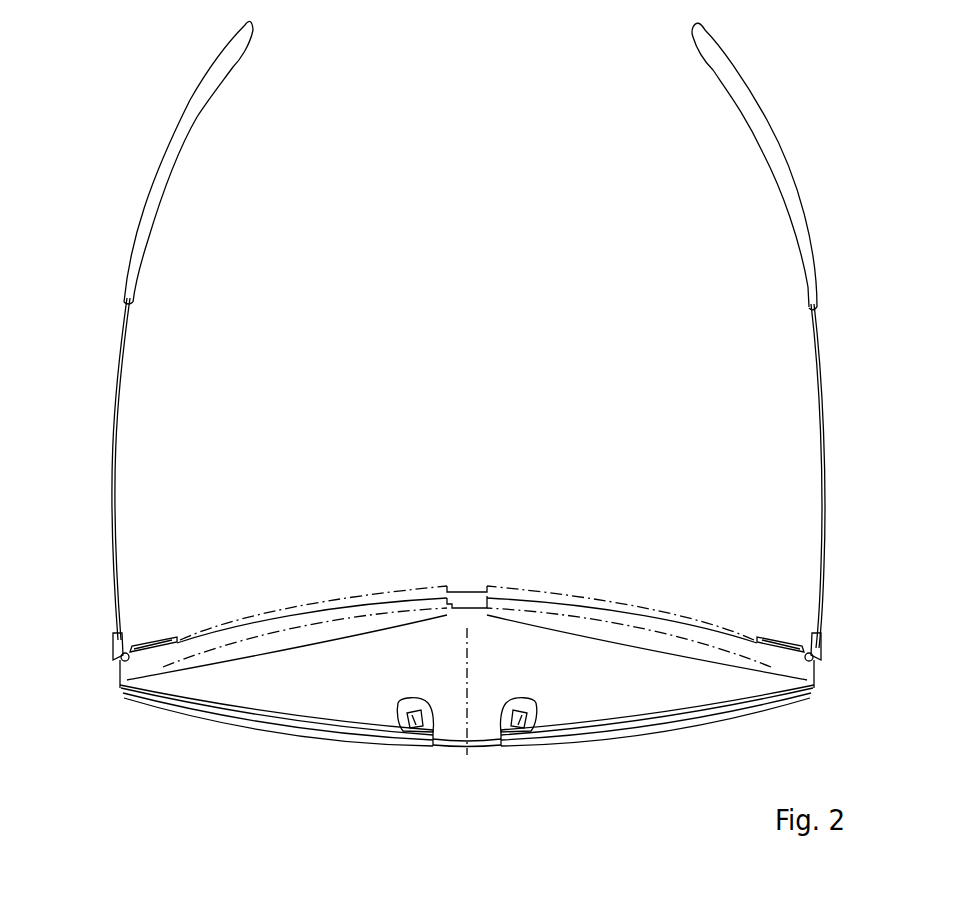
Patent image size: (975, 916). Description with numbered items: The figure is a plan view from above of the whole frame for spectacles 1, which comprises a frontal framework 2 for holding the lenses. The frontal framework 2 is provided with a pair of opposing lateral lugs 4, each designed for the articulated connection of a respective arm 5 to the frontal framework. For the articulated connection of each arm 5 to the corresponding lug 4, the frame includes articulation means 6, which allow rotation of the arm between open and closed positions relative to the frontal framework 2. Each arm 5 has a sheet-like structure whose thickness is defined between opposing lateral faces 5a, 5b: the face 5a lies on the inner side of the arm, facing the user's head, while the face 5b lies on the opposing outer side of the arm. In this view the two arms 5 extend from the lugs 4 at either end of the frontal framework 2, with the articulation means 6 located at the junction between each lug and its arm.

The frame for spectacles 1 is at (257, 768).
The frontal framework 2 is at (427, 752).
The lateral lug 4 is at (117, 683).
The arm 5 is at (117, 455).
The inner lateral face of the arm 5a is at (817, 598).
The outer lateral face of the arm 5b is at (823, 570).
The articulation means 6 is at (107, 662).